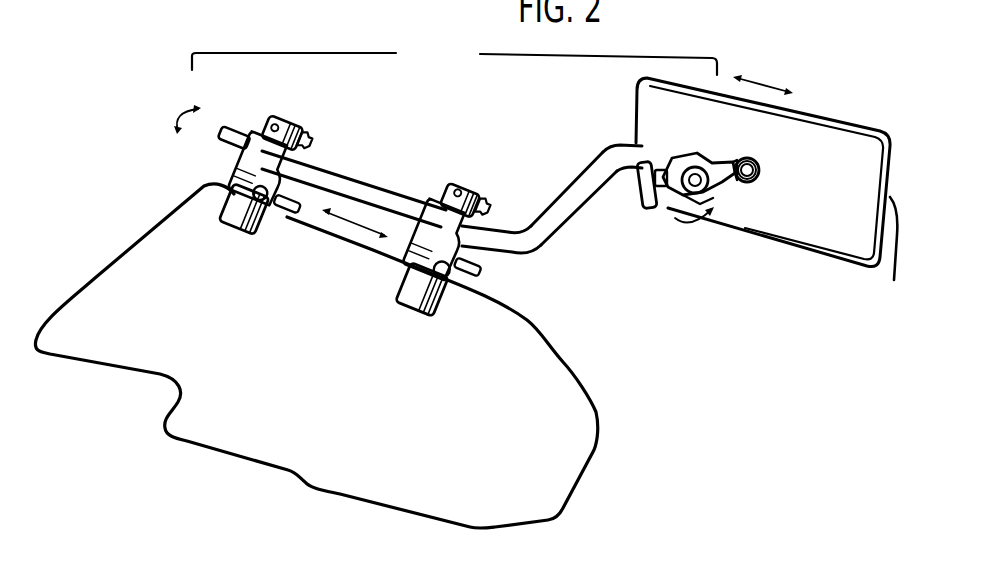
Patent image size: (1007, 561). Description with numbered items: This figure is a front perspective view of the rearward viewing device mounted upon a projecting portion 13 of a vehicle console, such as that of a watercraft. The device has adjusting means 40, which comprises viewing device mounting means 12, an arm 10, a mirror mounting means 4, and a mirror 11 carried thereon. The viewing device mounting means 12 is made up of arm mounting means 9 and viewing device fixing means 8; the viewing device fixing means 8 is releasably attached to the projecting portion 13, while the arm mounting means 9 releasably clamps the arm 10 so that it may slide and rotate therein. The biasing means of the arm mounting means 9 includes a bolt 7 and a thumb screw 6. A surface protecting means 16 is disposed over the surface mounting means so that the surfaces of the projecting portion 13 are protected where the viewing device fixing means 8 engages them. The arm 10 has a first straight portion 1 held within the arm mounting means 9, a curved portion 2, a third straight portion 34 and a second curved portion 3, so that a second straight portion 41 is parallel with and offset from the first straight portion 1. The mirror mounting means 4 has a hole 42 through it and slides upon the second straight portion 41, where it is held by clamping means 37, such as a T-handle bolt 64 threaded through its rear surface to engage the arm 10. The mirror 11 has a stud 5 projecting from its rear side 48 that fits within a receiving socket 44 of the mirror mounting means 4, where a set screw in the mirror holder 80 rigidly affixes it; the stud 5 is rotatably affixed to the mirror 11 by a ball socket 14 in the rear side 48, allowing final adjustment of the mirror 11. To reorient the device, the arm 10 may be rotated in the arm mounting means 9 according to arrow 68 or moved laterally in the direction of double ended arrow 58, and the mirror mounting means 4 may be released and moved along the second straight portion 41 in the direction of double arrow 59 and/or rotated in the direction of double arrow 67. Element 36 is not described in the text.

The first straight portion 1 is at (357, 185).
The curved portion 2 is at (520, 246).
The second curved portion 3 is at (600, 157).
The mirror mounting means 4 is at (680, 166).
The stud 5 is at (745, 157).
The thumb screw 6 is at (309, 127).
The bolt 7 is at (277, 121).
The viewing device fixing means 8 is at (240, 177).
The arm mounting means 9 is at (259, 131).
The arm 10 is at (554, 191).
The mirror 11 is at (828, 236).
The viewing device mounting means 12 is at (424, 243).
The projecting portion 13 is at (545, 387).
The ball socket 14 is at (757, 163).
The surface protecting means 16 is at (233, 216).
The third straight portion 34 is at (568, 212).
The projection 36 is at (287, 237).
The clamping means 37 is at (625, 189).
The adjusting means 40 is at (454, 50).
The second straight portion 41 is at (637, 158).
The hole 42 is at (712, 203).
The receiving socket 44 is at (723, 188).
The rear side 48 is at (870, 177).
The double ended arrow 58 is at (355, 248).
The double arrow 59 is at (763, 67).
The T-handle bolt 64 is at (480, 277).
The double arrow 67 is at (693, 238).
The arrow 68 is at (169, 110).
The mirror holder 80 is at (758, 173).